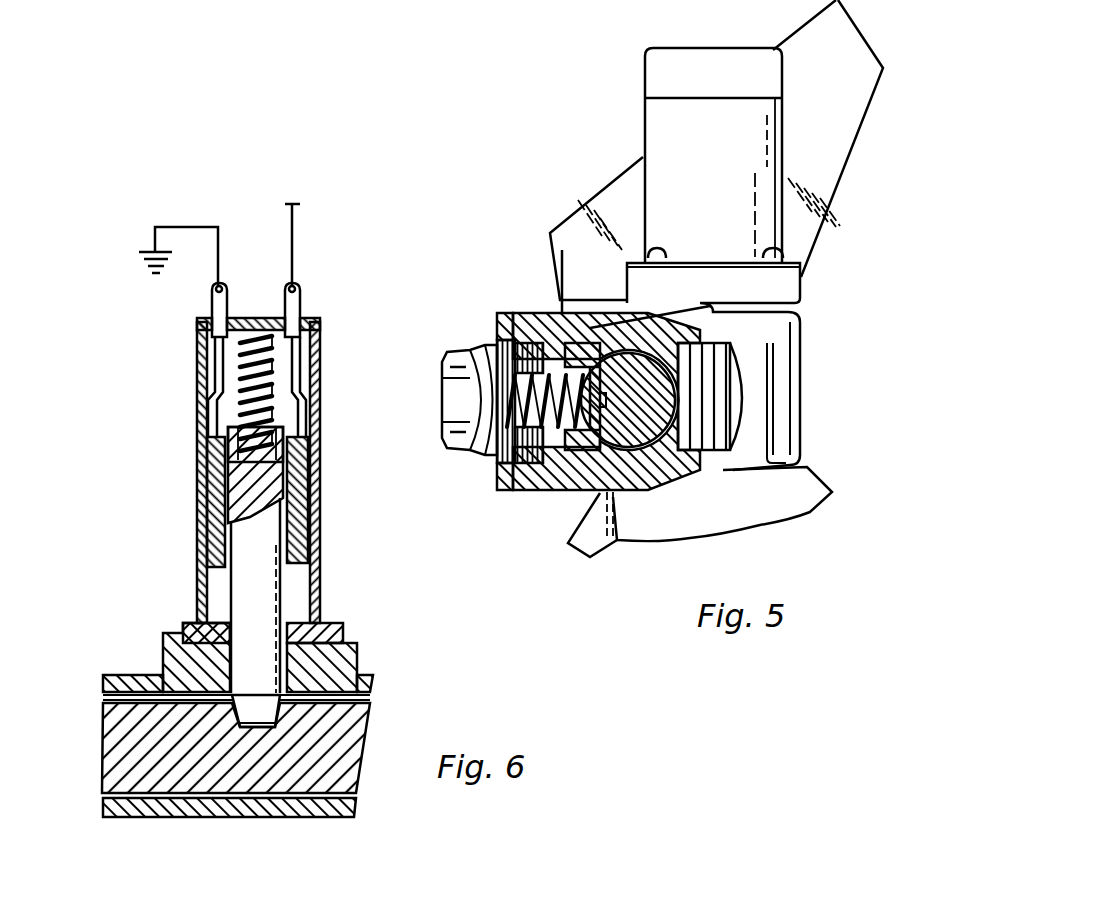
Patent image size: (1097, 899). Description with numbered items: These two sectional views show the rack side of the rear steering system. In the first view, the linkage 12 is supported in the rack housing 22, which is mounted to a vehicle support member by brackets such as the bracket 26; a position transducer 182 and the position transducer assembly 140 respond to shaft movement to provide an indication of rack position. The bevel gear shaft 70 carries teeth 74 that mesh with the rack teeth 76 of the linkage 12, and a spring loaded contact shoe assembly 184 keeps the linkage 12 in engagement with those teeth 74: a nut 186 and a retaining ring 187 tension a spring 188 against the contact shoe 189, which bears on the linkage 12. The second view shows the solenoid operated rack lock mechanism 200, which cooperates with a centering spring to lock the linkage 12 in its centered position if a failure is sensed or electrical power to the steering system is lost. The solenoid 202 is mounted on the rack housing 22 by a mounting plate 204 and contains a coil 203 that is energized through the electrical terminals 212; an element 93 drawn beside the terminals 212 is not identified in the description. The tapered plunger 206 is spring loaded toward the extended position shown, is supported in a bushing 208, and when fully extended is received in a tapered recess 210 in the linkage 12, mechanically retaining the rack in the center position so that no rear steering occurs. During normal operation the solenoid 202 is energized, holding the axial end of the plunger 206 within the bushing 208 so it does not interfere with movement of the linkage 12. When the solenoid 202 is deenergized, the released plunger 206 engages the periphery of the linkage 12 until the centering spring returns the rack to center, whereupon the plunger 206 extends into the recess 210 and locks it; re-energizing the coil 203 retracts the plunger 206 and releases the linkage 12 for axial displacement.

In FIG. 6, the linkage 12 is at (253, 778).
In FIG. 5, the linkage 12 is at (663, 430).
In FIG. 6, the rack housing 22 is at (187, 810).
In FIG. 5, the rack housing 22 is at (762, 408).
In FIG. 5, the bracket 26 is at (843, 143).
In FIG. 5, the bevel gear shaft 70 is at (730, 477).
In FIG. 5, the teeth 74 is at (730, 398).
In FIG. 5, the rack teeth 76 is at (673, 385).
In FIG. 6, the electrical lead 93 is at (295, 247).
In FIG. 5, the position transducer assembly 140 is at (645, 110).
In FIG. 5, the position transducer 182 is at (697, 77).
In FIG. 5, the contact shoe assembly 184 is at (525, 303).
In FIG. 5, the nut 186 is at (455, 398).
In FIG. 5, the retaining ring 187 is at (507, 483).
In FIG. 5, the spring 188 is at (557, 453).
In FIG. 5, the contact shoe 189 is at (588, 327).
In FIG. 6, the solenoid operated rack lock mechanism 200 is at (145, 630).
In FIG. 6, the solenoid 202 is at (198, 404).
In FIG. 6, the coil 203 is at (297, 495).
In FIG. 6, the mounting plate 204 is at (338, 622).
In FIG. 6, the tapered plunger 206 is at (243, 640).
In FIG. 6, the bushing 208 is at (297, 668).
In FIG. 6, the recess 210 is at (270, 711).
In FIG. 6, the electrical terminals 212 is at (277, 300).